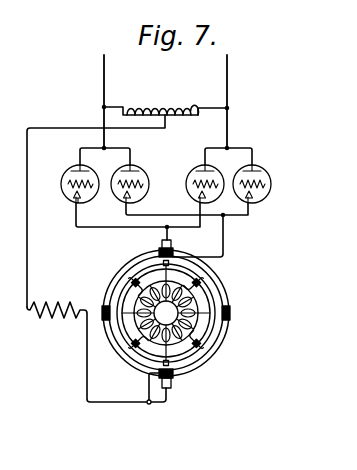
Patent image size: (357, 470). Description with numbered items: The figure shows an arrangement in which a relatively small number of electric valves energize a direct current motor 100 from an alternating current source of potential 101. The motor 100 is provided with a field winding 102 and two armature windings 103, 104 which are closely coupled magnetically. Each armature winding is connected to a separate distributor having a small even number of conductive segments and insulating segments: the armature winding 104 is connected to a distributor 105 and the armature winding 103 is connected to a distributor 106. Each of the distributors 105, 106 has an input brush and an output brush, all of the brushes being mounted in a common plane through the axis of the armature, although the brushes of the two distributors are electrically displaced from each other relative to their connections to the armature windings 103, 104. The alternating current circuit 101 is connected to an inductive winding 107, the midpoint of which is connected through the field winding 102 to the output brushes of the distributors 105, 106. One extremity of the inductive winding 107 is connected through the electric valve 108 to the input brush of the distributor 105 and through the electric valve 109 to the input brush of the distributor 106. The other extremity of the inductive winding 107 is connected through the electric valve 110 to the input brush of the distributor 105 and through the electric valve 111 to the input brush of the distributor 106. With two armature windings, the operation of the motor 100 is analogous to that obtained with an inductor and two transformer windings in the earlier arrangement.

The direct current motor 100 is at (97, 275).
The alternating current source of potential 101 is at (227, 70).
The field winding 102 is at (59, 322).
The armature winding 103 is at (190, 301).
The armature winding 104 is at (147, 324).
The distributor 105 is at (230, 301).
The distributor 106 is at (207, 329).
The inductive winding 107 is at (171, 104).
The electric valve 108 is at (68, 168).
The electric valve 109 is at (150, 163).
The electric valve 110 is at (189, 191).
The electric valve 111 is at (270, 191).